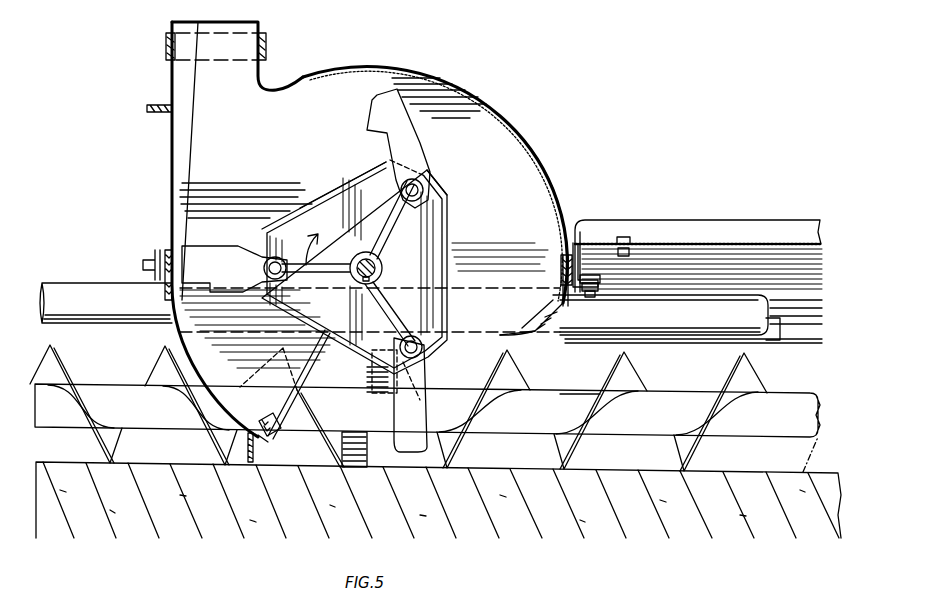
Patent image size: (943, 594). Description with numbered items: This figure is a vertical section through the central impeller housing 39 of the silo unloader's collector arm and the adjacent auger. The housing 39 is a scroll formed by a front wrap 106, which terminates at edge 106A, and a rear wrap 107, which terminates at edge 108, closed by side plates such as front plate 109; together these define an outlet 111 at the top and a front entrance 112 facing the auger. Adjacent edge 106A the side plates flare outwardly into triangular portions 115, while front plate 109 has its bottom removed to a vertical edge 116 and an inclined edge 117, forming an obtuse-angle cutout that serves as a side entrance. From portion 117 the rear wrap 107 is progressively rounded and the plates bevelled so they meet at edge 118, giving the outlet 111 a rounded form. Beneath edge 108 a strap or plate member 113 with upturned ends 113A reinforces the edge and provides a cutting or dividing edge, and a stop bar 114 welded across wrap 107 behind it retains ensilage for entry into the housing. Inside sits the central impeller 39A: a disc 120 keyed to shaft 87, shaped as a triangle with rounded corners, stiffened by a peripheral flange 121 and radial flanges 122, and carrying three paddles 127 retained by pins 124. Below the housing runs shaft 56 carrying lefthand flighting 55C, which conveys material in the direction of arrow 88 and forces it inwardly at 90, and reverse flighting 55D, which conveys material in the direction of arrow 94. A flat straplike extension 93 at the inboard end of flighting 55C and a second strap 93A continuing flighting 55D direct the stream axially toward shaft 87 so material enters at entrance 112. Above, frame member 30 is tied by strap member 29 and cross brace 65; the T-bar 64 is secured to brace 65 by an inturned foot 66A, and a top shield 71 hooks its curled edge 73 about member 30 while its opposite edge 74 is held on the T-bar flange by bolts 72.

The strap member 29 is at (163, 250).
The frame member 30 is at (721, 326).
The impeller housing 39 is at (467, 86).
The central impeller 39A is at (443, 180).
The auger flighting 55C is at (640, 370).
The reverse flighting 55D is at (95, 440).
The shaft 56 is at (789, 398).
The T-bar 64 is at (703, 222).
The cross brace 65 is at (566, 245).
The inturned foot 66A is at (590, 262).
The top shield member 71 is at (738, 277).
The bolt 72 is at (628, 238).
The curled edge 73 is at (795, 330).
The opposite edge 74 is at (786, 243).
The impeller shaft 87 is at (380, 266).
The arrow 88 is at (545, 446).
The entry location 90 is at (545, 357).
The straplike extension 93 is at (380, 392).
The second straplike extension 93A is at (362, 453).
The arrow 94 is at (178, 447).
The front wrap 106 is at (548, 185).
The terminating edge of front wrap 106A is at (560, 282).
The rear wrap 107 is at (170, 180).
The edge of rear wrap 108 is at (272, 436).
The front side plate 109 is at (327, 136).
The outlet 111 is at (192, 20).
The front entrance 112 is at (456, 360).
The strap or plate member 113 is at (274, 443).
The upturned ends 113A is at (272, 409).
The stop bar 114 is at (262, 440).
The triangular portions 115 is at (538, 312).
The vertical edge 116 is at (505, 337).
The inclined edge 117 is at (316, 368).
The terminating edge 118 is at (188, 128).
The central impeller disc 120 is at (449, 204).
The peripheral strengthening flange 121 is at (352, 183).
The radial strengthening flanges 122 is at (402, 200).
The pins 124 is at (417, 183).
The paddles 127 is at (372, 98).